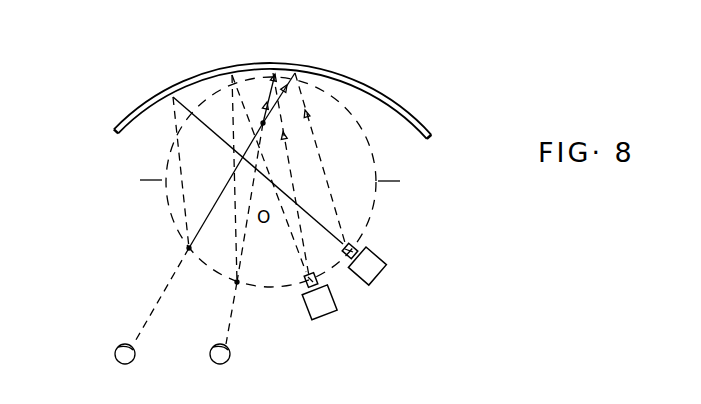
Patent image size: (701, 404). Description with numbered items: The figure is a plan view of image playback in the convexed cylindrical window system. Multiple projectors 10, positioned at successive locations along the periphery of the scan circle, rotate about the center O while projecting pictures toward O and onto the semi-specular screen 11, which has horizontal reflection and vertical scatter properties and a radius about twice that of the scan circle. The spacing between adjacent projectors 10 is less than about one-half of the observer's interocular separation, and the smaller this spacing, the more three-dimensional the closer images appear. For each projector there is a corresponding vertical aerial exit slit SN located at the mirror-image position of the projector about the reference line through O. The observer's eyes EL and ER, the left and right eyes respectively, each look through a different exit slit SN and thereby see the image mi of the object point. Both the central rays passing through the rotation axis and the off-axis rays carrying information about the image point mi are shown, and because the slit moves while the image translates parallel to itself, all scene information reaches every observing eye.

The projector 10 is at (318, 318).
The semi-specular screen 11 is at (134, 126).
The projector location PN is at (353, 329).
The aerial exit slit SN is at (238, 284).
The left eye EL is at (141, 358).
The right eye ER is at (237, 365).
The image of object point mi is at (268, 124).